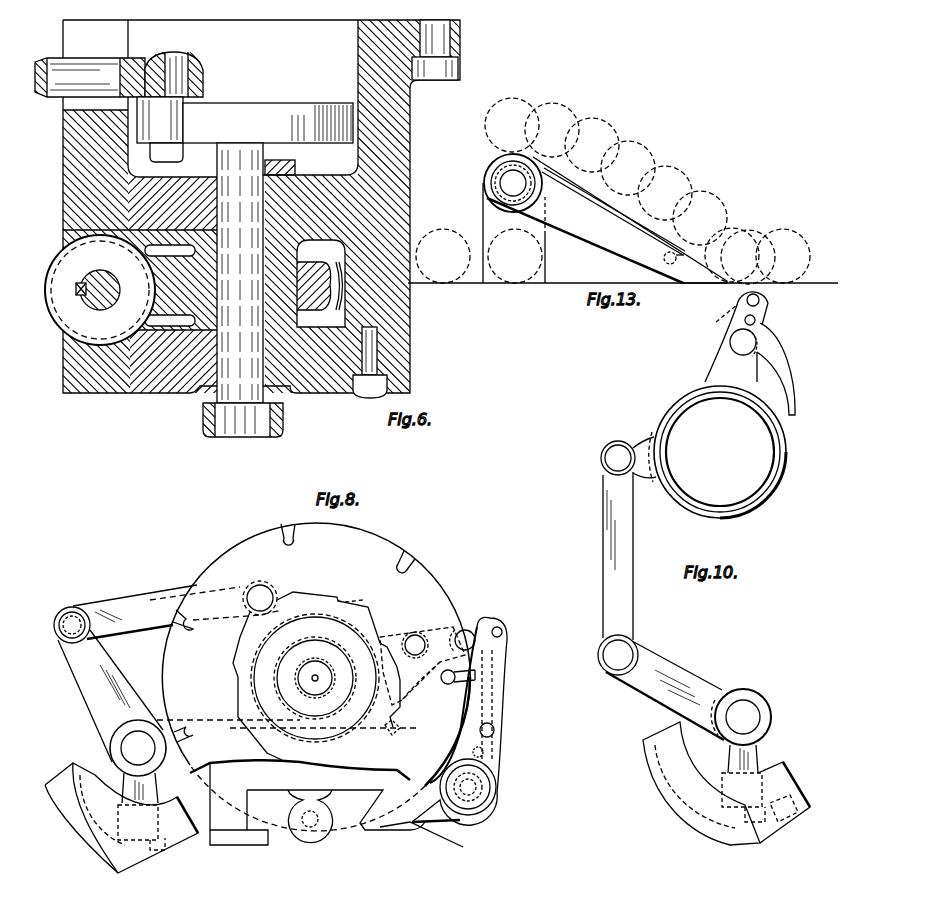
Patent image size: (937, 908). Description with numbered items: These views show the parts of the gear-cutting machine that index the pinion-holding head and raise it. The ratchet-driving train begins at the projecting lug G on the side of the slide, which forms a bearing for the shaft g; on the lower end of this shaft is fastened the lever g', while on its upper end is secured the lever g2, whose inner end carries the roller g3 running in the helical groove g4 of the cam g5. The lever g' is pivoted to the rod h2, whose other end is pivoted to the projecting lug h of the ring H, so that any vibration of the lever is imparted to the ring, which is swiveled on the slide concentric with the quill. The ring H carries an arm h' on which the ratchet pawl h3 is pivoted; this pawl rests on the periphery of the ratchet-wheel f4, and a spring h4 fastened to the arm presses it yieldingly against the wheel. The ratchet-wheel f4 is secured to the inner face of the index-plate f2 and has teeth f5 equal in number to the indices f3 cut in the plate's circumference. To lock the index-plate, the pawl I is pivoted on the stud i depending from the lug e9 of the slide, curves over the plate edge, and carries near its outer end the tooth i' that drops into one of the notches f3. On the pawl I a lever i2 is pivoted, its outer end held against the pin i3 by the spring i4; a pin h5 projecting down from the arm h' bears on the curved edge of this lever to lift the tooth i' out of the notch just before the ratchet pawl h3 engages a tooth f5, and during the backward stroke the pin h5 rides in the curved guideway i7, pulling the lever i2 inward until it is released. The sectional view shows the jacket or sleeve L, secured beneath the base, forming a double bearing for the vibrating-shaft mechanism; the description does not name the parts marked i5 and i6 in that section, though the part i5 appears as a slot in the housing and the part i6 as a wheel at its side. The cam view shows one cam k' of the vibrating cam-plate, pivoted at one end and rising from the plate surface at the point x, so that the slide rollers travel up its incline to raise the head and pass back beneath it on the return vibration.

In FIG. 6, the jacket or sleeve L is at (396, 148).
In FIG. 6, the stud i is at (323, 440).
In FIG. 8, the stud i is at (514, 838).
In FIG. 6, the tooth i' is at (268, 107).
In FIG. 13, the tooth i' is at (605, 218).
In FIG. 8, the tooth i' is at (495, 677).
In FIG. 6, the lever i2 is at (468, 454).
In FIG. 8, the lever i2 is at (492, 628).
In FIG. 6, the pin i3 is at (95, 64).
In FIG. 8, the pin i3 is at (504, 634).
In FIG. 6, the spring i4 is at (318, 306).
In FIG. 8, the spring i4 is at (495, 725).
In FIG. 6, the slot i5 is at (116, 303).
In FIG. 6, the wheel i6 is at (70, 262).
In FIG. 8, the curved guideway i7 is at (495, 660).
In FIG. 8, the pawl I is at (505, 726).
In FIG. 13, the cam k' is at (533, 233).
In FIG. 13, the reference point x is at (546, 271).
In FIG. 10, the ring H is at (777, 492).
In FIG. 10, the projecting lug h is at (628, 448).
In FIG. 8, the projecting lug h is at (72, 625).
In FIG. 10, the arm h' is at (748, 337).
In FIG. 8, the arm h' is at (422, 650).
In FIG. 10, the rod h2 is at (637, 585).
In FIG. 8, the rod h2 is at (141, 610).
In FIG. 10, the ratchet pawl h3 is at (796, 392).
In FIG. 8, the ratchet pawl h3 is at (421, 681).
In FIG. 10, the spring h4 is at (768, 326).
In FIG. 8, the spring h4 is at (425, 648).
In FIG. 10, the pin h5 is at (730, 317).
In FIG. 8, the pin h5 is at (466, 628).
In FIG. 8, the projecting lug G is at (158, 716).
In FIG. 10, the shaft g is at (741, 717).
In FIG. 8, the shaft g is at (140, 781).
In FIG. 10, the lever g' is at (661, 687).
In FIG. 8, the lever g' is at (101, 696).
In FIG. 10, the lever g2 is at (762, 746).
In FIG. 10, the roller g3 is at (768, 768).
In FIG. 8, the roller g3 is at (162, 805).
In FIG. 10, the helical groove g4 is at (692, 798).
In FIG. 8, the helical groove g4 is at (75, 775).
In FIG. 10, the cam g5 is at (696, 783).
In FIG. 8, the cam g5 is at (135, 818).
In FIG. 8, the index-plate f2 is at (257, 587).
In FIG. 8, the indices f3 is at (417, 562).
In FIG. 8, the ratchet-wheel f4 is at (364, 600).
In FIG. 8, the teeth f5 is at (345, 606).
In FIG. 8, the lug e9 is at (443, 800).